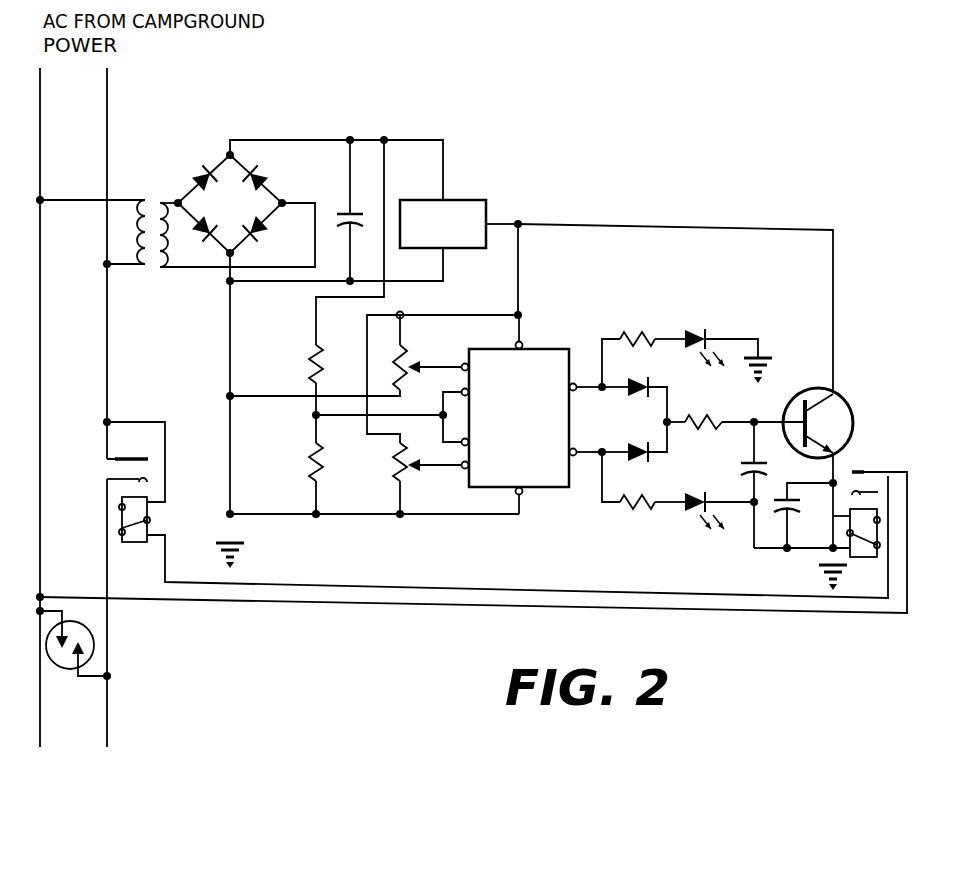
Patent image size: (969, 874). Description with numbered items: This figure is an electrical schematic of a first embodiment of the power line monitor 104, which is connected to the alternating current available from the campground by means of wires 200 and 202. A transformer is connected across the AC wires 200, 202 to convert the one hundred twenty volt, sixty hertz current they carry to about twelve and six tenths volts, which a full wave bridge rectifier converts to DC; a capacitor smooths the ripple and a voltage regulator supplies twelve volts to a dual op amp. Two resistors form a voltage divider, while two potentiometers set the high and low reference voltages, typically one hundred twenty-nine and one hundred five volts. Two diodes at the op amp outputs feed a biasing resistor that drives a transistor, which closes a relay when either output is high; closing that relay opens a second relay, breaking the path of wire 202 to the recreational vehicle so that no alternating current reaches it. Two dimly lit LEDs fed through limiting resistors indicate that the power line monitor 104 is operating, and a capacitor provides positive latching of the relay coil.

The wire 200 is at (71, 114).
The wire 202 is at (109, 118).
The power line monitor 104 is at (656, 179).